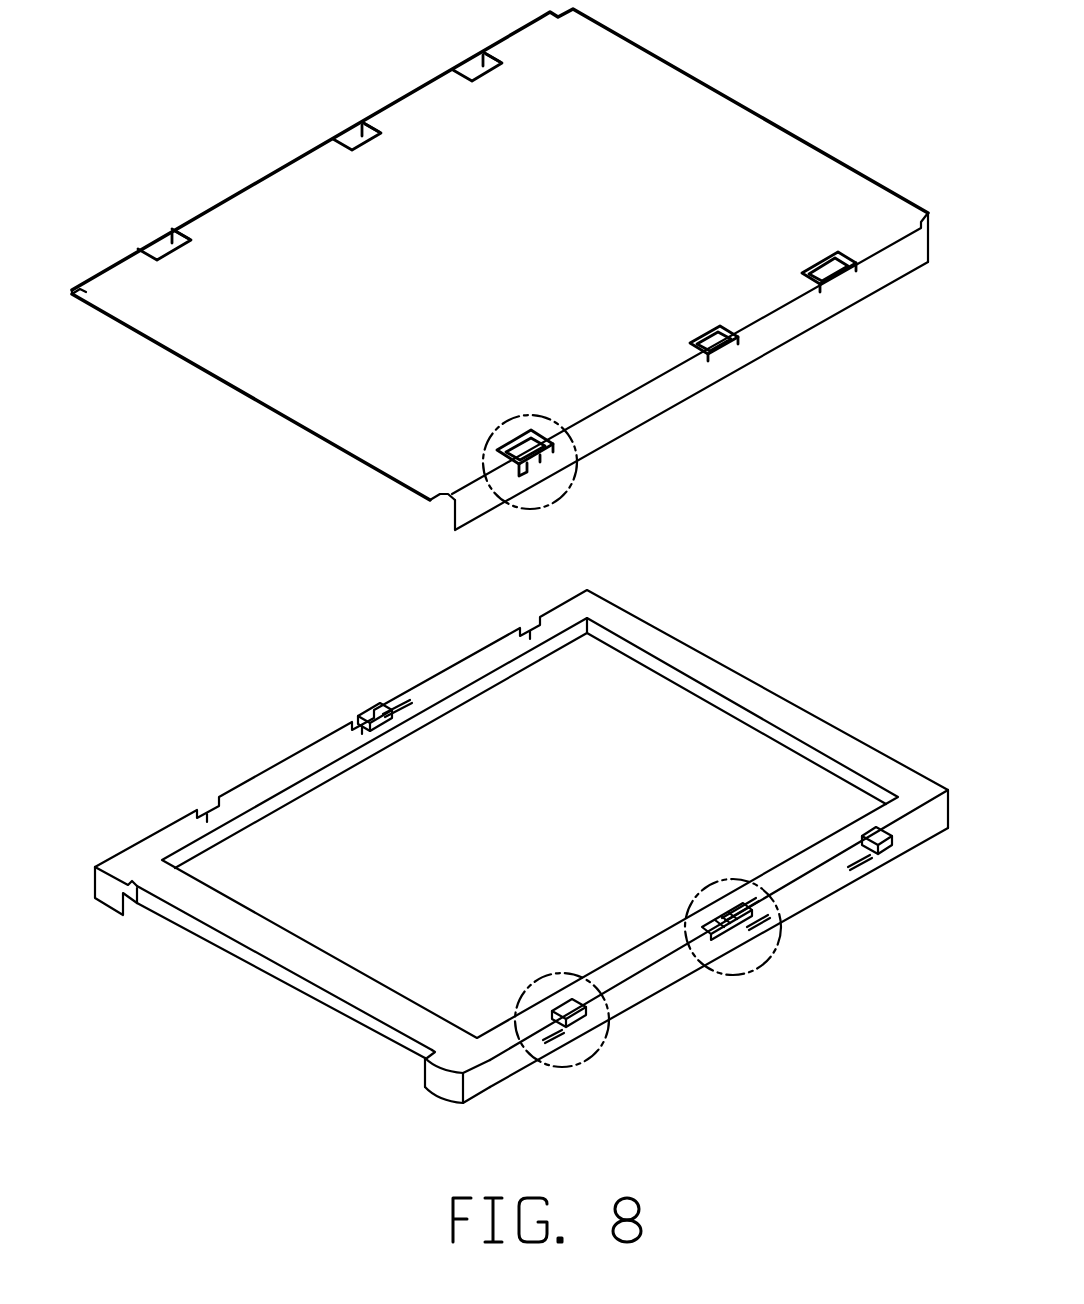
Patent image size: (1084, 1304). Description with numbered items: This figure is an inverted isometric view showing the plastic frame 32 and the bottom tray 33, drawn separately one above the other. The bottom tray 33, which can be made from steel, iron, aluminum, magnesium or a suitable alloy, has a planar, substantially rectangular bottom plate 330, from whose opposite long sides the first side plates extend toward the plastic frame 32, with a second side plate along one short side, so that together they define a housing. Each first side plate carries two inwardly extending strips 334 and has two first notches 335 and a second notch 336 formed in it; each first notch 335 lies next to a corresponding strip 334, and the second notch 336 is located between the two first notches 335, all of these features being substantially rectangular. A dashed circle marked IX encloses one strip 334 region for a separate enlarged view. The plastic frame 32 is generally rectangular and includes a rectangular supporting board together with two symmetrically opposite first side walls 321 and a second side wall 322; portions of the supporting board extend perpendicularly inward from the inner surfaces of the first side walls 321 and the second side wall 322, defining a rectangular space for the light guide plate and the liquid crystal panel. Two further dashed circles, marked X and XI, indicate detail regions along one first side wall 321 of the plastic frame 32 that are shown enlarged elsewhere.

The bottom tray 33 is at (509, 285).
The bottom plate 330 is at (500, 269).
The strip 334 is at (545, 462).
The first notch 335 is at (835, 293).
The second notch 336 is at (720, 344).
The plastic frame 32 is at (533, 864).
The second side wall 322 is at (521, 846).
The first side wall 321 is at (840, 883).
The detail view IX is at (576, 484).
The detail view X is at (562, 1073).
The detail view XI is at (736, 977).